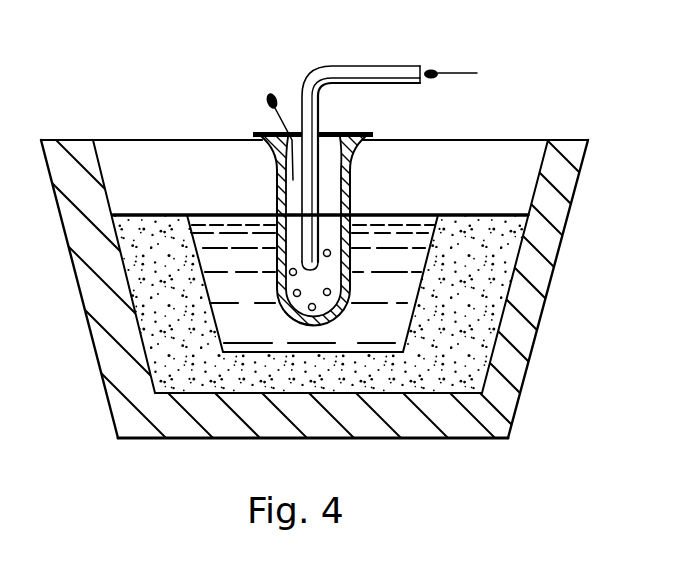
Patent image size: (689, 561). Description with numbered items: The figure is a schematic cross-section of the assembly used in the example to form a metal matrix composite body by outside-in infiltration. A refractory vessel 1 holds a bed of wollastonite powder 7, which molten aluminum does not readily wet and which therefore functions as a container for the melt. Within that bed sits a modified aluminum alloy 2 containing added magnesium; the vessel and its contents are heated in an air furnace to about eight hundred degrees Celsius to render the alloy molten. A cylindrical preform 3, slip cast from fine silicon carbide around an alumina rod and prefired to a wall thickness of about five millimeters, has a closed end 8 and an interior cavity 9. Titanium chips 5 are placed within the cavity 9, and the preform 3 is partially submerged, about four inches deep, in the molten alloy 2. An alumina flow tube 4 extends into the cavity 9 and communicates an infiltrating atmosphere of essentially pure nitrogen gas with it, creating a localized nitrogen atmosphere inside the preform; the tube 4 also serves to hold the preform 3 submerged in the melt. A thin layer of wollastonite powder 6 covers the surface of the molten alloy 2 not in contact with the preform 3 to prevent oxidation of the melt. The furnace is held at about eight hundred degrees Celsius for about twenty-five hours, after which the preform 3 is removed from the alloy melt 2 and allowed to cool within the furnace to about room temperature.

The refractory vessel 1 is at (547, 283).
The aluminum alloy 2 is at (362, 340).
The cylindrical preform 3 is at (349, 207).
The alumina flow tube 4 is at (371, 66).
The titanium chips 5 is at (324, 257).
The layer of wollastonite powder 6 is at (415, 214).
The bed of wollastonite powder 7 is at (150, 320).
The closed end 8 is at (297, 316).
The cavity 9 is at (293, 178).